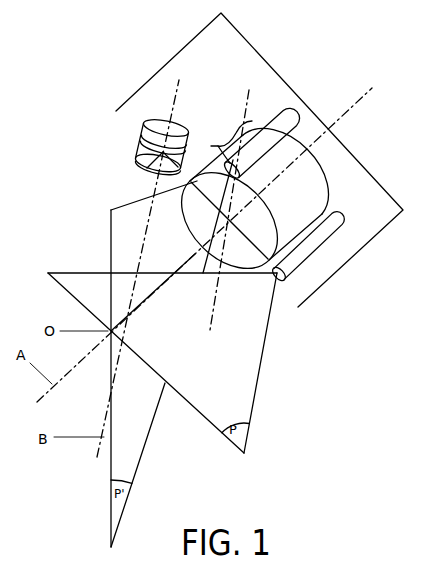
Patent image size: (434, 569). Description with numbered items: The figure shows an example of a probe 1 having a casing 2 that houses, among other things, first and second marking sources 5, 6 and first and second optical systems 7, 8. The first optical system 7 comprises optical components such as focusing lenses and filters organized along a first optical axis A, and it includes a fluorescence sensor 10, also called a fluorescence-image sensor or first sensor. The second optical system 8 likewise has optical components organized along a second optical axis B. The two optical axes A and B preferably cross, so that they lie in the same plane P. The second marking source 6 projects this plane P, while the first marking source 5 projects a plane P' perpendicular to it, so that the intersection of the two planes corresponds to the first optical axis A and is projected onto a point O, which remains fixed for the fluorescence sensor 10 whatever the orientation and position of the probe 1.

The probe 1 is at (92, 168).
The casing 2 is at (257, 48).
The first marking source 5 is at (290, 114).
The second marking source 6 is at (325, 235).
The first optical system 7 is at (211, 146).
The second optical system 8 is at (137, 122).
The fluorescence sensor 10 is at (307, 167).